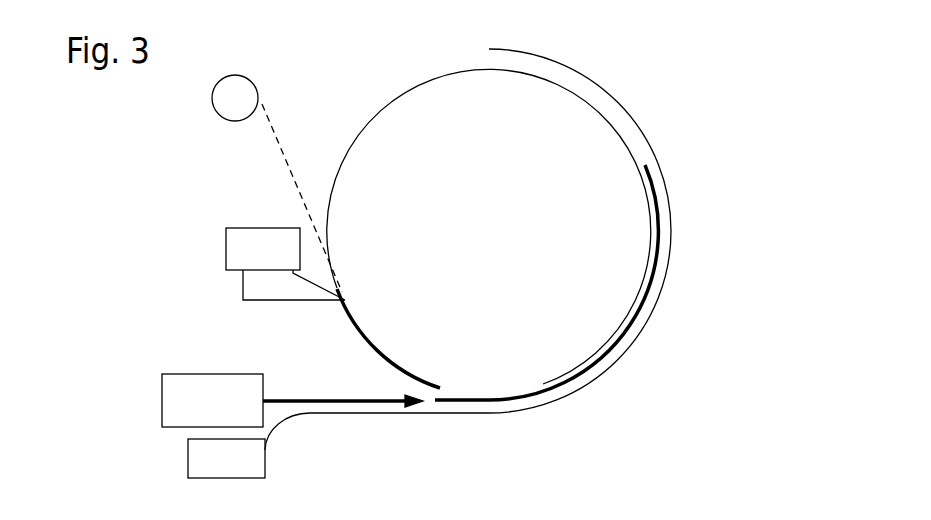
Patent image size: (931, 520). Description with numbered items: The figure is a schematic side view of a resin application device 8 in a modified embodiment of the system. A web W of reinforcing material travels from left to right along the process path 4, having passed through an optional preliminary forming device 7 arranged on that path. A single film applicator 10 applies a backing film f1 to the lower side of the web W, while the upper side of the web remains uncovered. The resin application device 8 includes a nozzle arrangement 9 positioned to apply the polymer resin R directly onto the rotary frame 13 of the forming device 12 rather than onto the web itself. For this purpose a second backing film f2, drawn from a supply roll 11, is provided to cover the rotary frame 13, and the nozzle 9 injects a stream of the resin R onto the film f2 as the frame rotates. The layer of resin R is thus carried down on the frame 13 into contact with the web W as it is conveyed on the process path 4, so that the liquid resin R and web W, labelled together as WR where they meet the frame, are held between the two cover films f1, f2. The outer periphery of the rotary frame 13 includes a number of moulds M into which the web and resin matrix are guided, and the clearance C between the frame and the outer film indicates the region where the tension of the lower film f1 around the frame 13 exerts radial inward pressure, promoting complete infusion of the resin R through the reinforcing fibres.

The process path 4 is at (350, 399).
The preliminary forming device 7 is at (219, 411).
The resin application device 8 is at (215, 248).
The nozzle arrangement 9 is at (253, 288).
The film applicator 10 is at (238, 471).
The reservoir 11 is at (212, 100).
The forming device 12 is at (705, 152).
The rotary frame 13 is at (518, 238).
The polymer resin R is at (370, 338).
The mould M is at (648, 322).
The gap C is at (670, 218).
The web of reinforcing material W is at (302, 399).
The web and section WR is at (500, 403).
The backing film f1 is at (282, 423).
The second backing film f2 is at (274, 131).